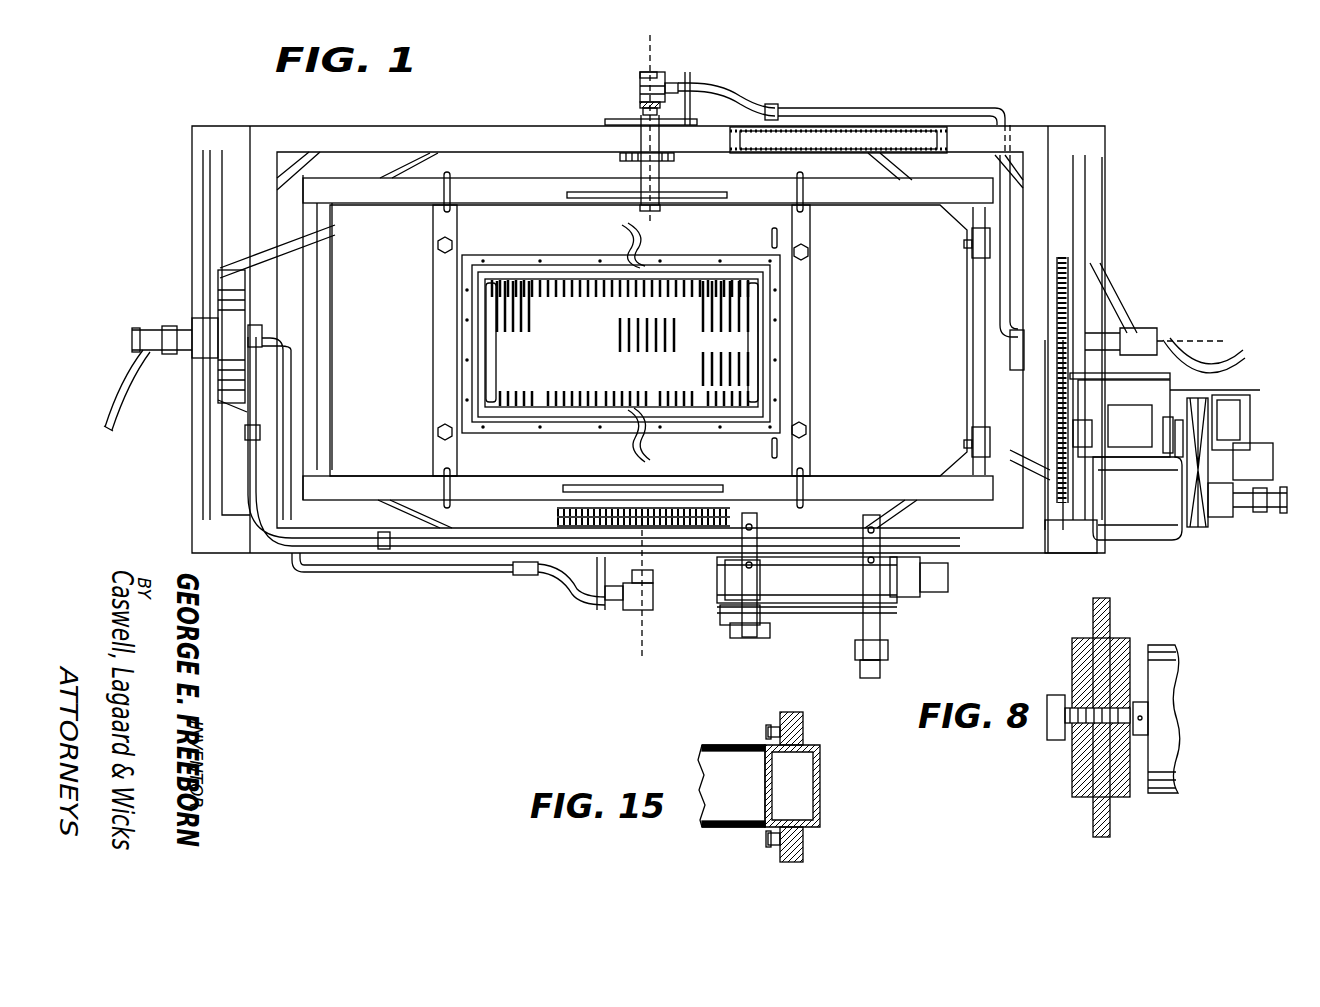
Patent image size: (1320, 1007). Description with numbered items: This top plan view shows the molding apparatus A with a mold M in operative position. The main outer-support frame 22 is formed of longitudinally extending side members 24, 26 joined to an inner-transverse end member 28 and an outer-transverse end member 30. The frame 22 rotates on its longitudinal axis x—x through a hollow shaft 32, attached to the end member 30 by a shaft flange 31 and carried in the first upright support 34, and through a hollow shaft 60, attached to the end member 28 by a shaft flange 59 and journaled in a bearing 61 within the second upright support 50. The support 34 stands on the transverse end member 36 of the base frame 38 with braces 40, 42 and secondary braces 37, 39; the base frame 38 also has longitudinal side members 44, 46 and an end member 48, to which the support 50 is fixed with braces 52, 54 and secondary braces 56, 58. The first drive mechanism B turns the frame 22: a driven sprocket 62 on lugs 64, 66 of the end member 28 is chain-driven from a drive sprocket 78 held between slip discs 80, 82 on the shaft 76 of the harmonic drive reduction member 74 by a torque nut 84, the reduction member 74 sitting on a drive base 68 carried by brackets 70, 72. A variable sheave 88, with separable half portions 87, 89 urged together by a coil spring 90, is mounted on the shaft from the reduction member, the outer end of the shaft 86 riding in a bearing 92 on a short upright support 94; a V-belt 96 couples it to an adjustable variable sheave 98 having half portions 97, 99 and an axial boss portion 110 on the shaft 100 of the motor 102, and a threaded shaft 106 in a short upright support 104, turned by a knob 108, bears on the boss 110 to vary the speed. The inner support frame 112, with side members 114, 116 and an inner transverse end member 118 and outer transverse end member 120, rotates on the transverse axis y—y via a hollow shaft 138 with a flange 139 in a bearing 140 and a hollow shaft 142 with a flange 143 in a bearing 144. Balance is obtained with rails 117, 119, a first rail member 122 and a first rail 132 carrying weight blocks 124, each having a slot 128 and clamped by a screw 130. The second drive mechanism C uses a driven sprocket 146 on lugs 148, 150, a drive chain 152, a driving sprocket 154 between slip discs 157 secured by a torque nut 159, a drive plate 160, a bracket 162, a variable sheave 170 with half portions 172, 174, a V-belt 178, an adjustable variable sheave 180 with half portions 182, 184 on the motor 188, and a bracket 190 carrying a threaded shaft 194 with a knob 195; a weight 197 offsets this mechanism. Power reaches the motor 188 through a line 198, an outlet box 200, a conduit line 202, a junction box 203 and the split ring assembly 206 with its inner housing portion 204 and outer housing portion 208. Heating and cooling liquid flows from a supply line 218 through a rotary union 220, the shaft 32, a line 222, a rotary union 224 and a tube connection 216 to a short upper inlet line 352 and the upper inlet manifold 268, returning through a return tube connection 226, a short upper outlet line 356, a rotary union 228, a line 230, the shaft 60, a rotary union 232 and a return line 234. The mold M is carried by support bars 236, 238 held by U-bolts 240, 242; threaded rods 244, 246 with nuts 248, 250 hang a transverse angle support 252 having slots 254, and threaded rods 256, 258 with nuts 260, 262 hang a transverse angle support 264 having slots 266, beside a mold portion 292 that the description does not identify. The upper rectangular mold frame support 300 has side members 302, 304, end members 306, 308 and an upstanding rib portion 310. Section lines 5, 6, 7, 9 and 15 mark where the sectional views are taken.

In FIG. 1, the machine frame 22 is at (1037, 127).
In FIG. 1, the main frame 24 is at (538, 130).
In FIG. 1, the supply pipe 26 is at (467, 575).
In FIG. 1, the side plate 28 is at (1050, 190).
In FIG. 1, the side plate 30 is at (240, 205).
In FIG. 1, the pipe elbow 31 is at (255, 328).
In FIG. 1, the fitting 32 is at (188, 358).
In FIG. 1, the valve block 34 is at (200, 325).
In FIG. 1, the lower member 36 is at (190, 503).
In FIG. 1, the brace 37 is at (390, 512).
In FIG. 1, the lower member 38 is at (188, 488).
In FIG. 1, the brace 39 is at (395, 167).
In FIG. 1, the upright 40 is at (205, 455).
In FIG. 1, the upright strip 42 is at (205, 178).
In FIG. 1, the base 44 is at (238, 553).
In FIG. 1, the corner post 46 is at (243, 130).
In FIG. 1, the post 48 is at (1100, 203).
In FIG. 1, the brace 50 is at (1090, 318).
In FIG. 1, the bracket 52 is at (1082, 553).
In FIG. 1, the post 54 is at (1085, 213).
In FIG. 1, the brace 56 is at (1010, 462).
In FIG. 1, the brace 58 is at (903, 160).
In FIG. 1, the bracket 59 is at (1012, 360).
In FIG. 1, the brace 60 is at (1095, 330).
In FIG. 1, the rail 61 is at (1056, 378).
In FIG. 1, the brace 62 is at (1068, 298).
In FIG. 1, the rail 64 is at (1056, 412).
In FIG. 1, the chain 66 is at (1048, 380).
In FIG. 1, the funnel 68 is at (1204, 351).
In FIG. 1, the housing 70 is at (1265, 445).
In FIG. 1, the block 72 is at (1230, 392).
In FIG. 1, the shaft 74 is at (1151, 490).
In FIG. 8, the shaft 74 is at (1175, 660).
In FIG. 1, the nut 76 is at (1148, 444).
In FIG. 8, the nut 76 is at (1150, 712).
In FIG. 1, the plate 78 is at (1062, 487).
In FIG. 8, the plate 78 is at (1092, 818).
In FIG. 1, the plate 80 is at (1060, 470).
In FIG. 8, the plate 80 is at (1075, 770).
In FIG. 1, the block 82 is at (1120, 415).
In FIG. 8, the block 82 is at (1120, 652).
In FIG. 1, the bolt 84 is at (1058, 434).
In FIG. 8, the bolt 84 is at (1050, 725).
In FIG. 1, the motor 86 is at (1137, 498).
In FIG. 1, the coupling 87 is at (1239, 351).
In FIG. 1, the shaft 88 is at (1215, 418).
In FIG. 1, the hose 89 is at (1271, 351).
In FIG. 1, the motor housing 90 is at (1151, 510).
In FIG. 1, the bearing 92 is at (1250, 438).
In FIG. 1, the bearing block 94 is at (1245, 400).
In FIG. 1, the pulley 96 is at (1198, 540).
In FIG. 1, the pulley flange 97 is at (1188, 540).
In FIG. 1, the pulley flange 98 is at (1208, 535).
In FIG. 1, the bearing 99 is at (1210, 525).
In FIG. 1, the motor base 100 is at (1135, 533).
In FIG. 1, the motor base 102 is at (1150, 550).
In FIG. 1, the shaft end 104 is at (1250, 515).
In FIG. 1, the nut 106 is at (1240, 510).
In FIG. 1, the housing 108 is at (1290, 470).
In FIG. 1, the shaft 110 is at (1258, 581).
In FIG. 1, the carriage frame 112 is at (485, 175).
In FIG. 15, the carriage frame 112 is at (700, 827).
In FIG. 1, the cross member 114 is at (878, 461).
In FIG. 1, the channel member 116 is at (883, 233).
In FIG. 15, the channel member 116 is at (712, 765).
In FIG. 1, the chain 117 is at (556, 506).
In FIG. 1, the tubular member 118 is at (967, 312).
In FIG. 15, the tubular member 118 is at (820, 782).
In FIG. 1, the plate 119 is at (610, 200).
In FIG. 1, the post 120 is at (332, 296).
In FIG. 1, the rod 122 is at (975, 297).
In FIG. 15, the rod 122 is at (803, 726).
In FIG. 1, the bracket 124 is at (972, 234).
In FIG. 15, the bracket 124 is at (780, 712).
In FIG. 15, the bracket block 128 is at (803, 722).
In FIG. 1, the bolt 130 is at (966, 246).
In FIG. 15, the bolt 130 is at (766, 729).
In FIG. 1, the tube 132 is at (332, 326).
In FIG. 1, the shaft 138 is at (642, 118).
In FIG. 1, the collar 139 is at (656, 212).
In FIG. 1, the gear 140 is at (640, 158).
In FIG. 1, the fitting 142 is at (653, 575).
In FIG. 1, the plate 143 is at (693, 461).
In FIG. 1, the chain link 144 is at (623, 523).
In FIG. 1, the hose 146 is at (570, 528).
In FIG. 1, the sprocket 148 is at (588, 461).
In FIG. 1, the sprocket 150 is at (723, 461).
In FIG. 1, the shaft 152 is at (588, 440).
In FIG. 1, the bracket 154 is at (790, 512).
In FIG. 1, the block 157 is at (767, 577).
In FIG. 1, the plate 159 is at (670, 487).
In FIG. 1, the gear box 160 is at (720, 580).
In FIG. 1, the gear box cover 162 is at (722, 595).
In FIG. 1, the bracket 170 is at (725, 640).
In FIG. 1, the bracket 172 is at (760, 644).
In FIG. 1, the post 174 is at (775, 575).
In FIG. 1, the rail 178 is at (808, 639).
In FIG. 1, the bracket 180 is at (905, 645).
In FIG. 1, the bracket 182 is at (895, 662).
In FIG. 1, the motor 184 is at (915, 603).
In FIG. 1, the bracket 188 is at (843, 461).
In FIG. 1, the post 190 is at (863, 582).
In FIG. 1, the nut 194 is at (862, 670).
In FIG. 1, the bolt 195 is at (883, 699).
In FIG. 1, the slide 197 is at (790, 140).
In FIG. 1, the motor cap 198 is at (920, 593).
In FIG. 1, the pipe 200 is at (962, 552).
In FIG. 1, the pipe 202 is at (365, 548).
In FIG. 1, the pipe 203 is at (285, 278).
In FIG. 1, the pipe 204 is at (290, 262).
In FIG. 1, the hub 206 is at (218, 292).
In FIG. 1, the coupling 208 is at (220, 275).
In FIG. 1, the nozzle pipe 216 is at (652, 440).
In FIG. 1, the hose 218 is at (121, 409).
In FIG. 1, the pipe 220 is at (155, 330).
In FIG. 1, the pipe 222 is at (292, 392).
In FIG. 1, the valve 224 is at (630, 610).
In FIG. 1, the nozzle pipe 226 is at (628, 243).
In FIG. 1, the valve 228 is at (640, 78).
In FIG. 1, the pipe 230 is at (858, 112).
In FIG. 1, the pipe 232 is at (1140, 338).
In FIG. 1, the hose 234 is at (1252, 352).
In FIG. 1, the post 236 is at (437, 303).
In FIG. 1, the panel 238 is at (812, 287).
In FIG. 1, the cross bar 240 is at (446, 193).
In FIG. 1, the cross bar 242 is at (805, 195).
In FIG. 1, the bolt 244 is at (437, 438).
In FIG. 1, the bolt 246 is at (436, 262).
In FIG. 1, the nut 248 is at (441, 428).
In FIG. 1, the nut 250 is at (435, 247).
In FIG. 1, the post 252 is at (455, 332).
In FIG. 1, the pin 254 is at (478, 232).
In FIG. 1, the nut 256 is at (808, 428).
In FIG. 1, the nut 258 is at (812, 258).
In FIG. 1, the bolt 260 is at (803, 408).
In FIG. 1, the bolt 262 is at (805, 246).
In FIG. 1, the post 264 is at (792, 347).
In FIG. 1, the pin 266 is at (772, 246).
In FIG. 1, the slots 268 is at (647, 345).
In FIG. 1, the screen frame 292 is at (610, 358).
In FIG. 1, the channel 300 is at (544, 342).
In FIG. 1, the channel 302 is at (675, 342).
In FIG. 1, the slots 304 is at (535, 306).
In FIG. 1, the bar 306 is at (490, 356).
In FIG. 1, the slots 308 is at (765, 334).
In FIG. 1, the bars 310 is at (826, 320).
In FIG. 1, the slots 352 is at (624, 392).
In FIG. 1, the slots 356 is at (620, 294).
In FIG. 1, the machine A is at (1163, 112).
In FIG. 1, the drive unit B is at (1212, 565).
In FIG. 1, the drive unit C is at (795, 662).
In FIG. 1, the mold M is at (668, 283).
In FIG. 1, the section line 5 is at (130, 338).
In FIG. 1, the section line 6 is at (652, 45).
In FIG. 1, the section line 7 is at (540, 463).
In FIG. 1, the section line 9 is at (387, 396).
In FIG. 1, the section line 15 is at (940, 437).
In FIG. 1, the axis x is at (656, 337).
In FIG. 1, the axis y is at (630, 680).